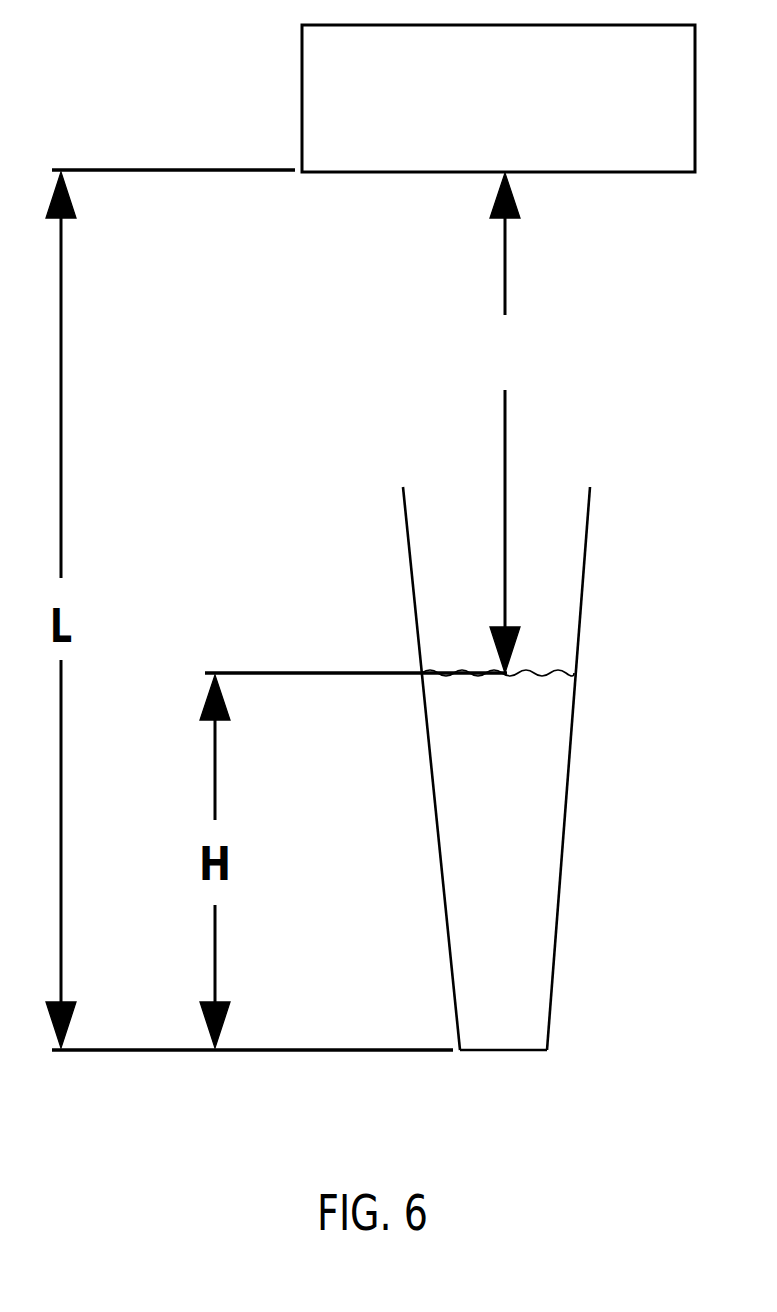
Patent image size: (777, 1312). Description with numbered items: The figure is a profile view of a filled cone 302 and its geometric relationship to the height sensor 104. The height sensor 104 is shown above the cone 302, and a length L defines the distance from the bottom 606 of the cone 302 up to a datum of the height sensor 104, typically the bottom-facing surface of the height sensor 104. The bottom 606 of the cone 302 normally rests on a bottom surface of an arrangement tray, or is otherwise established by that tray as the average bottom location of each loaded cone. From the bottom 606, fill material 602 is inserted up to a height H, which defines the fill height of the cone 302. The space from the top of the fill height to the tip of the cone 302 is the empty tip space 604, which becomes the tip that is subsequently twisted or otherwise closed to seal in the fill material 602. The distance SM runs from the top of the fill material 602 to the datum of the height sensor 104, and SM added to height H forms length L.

The height sensor 104 is at (315, 63).
The cone 302 is at (463, 799).
The fill material 602 is at (455, 818).
The empty tip space 604 is at (462, 497).
The bottom 606 is at (483, 1052).